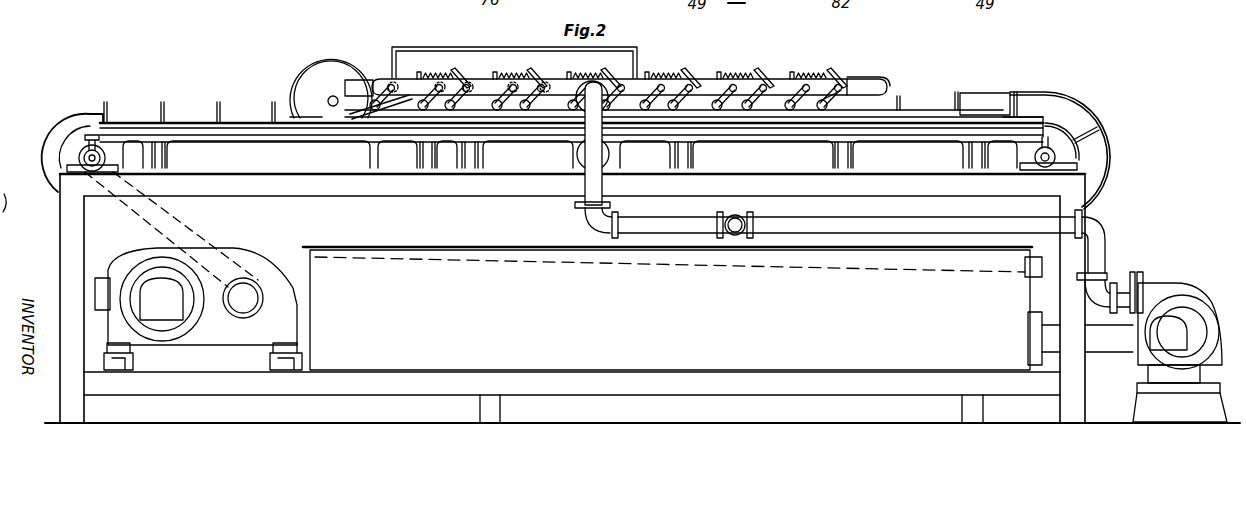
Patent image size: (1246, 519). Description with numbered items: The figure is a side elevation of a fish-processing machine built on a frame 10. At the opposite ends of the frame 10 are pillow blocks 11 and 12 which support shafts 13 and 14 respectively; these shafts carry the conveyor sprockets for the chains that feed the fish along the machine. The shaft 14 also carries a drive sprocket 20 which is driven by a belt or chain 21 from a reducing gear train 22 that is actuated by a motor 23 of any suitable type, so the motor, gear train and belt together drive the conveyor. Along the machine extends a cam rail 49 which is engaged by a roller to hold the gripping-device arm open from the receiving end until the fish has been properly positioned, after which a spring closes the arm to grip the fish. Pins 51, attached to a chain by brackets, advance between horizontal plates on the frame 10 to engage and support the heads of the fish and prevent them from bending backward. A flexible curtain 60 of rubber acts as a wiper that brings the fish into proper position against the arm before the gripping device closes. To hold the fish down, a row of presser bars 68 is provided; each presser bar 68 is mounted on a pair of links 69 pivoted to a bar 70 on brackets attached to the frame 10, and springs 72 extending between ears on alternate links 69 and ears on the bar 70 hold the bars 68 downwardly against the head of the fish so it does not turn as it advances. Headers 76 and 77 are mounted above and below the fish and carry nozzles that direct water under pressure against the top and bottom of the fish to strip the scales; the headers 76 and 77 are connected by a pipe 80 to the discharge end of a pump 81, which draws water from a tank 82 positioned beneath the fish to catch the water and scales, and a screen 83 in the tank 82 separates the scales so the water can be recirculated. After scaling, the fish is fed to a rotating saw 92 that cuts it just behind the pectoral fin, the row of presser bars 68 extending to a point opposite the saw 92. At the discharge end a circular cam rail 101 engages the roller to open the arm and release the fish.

The frame 10 is at (526, 190).
The pillow block 11 is at (1060, 165).
The pillow block 12 is at (96, 173).
The shaft 13 is at (1049, 151).
The shaft 14 is at (100, 150).
The drive sprocket 20 is at (58, 152).
The belt or chain 21 is at (160, 222).
The reducing gear train 22 is at (263, 264).
The motor 23 is at (150, 288).
The cam rail 49 is at (929, 125).
The pins 51 is at (223, 108).
The curtain 60 is at (632, 106).
The presser bars 68 is at (800, 112).
The links 69 is at (832, 98).
The bar 70 is at (873, 82).
The springs 72 is at (733, 78).
The header 76 is at (481, 82).
The header 77 is at (503, 152).
The pipe 80 is at (587, 183).
The pump 81 is at (1197, 306).
The tank 82 is at (672, 308).
The screen 83 is at (684, 277).
The rotating saw 92 is at (301, 78).
The circular cam rail 101 is at (64, 123).